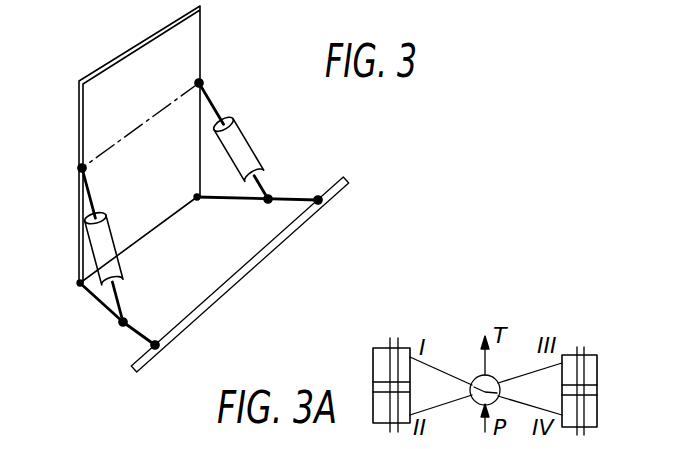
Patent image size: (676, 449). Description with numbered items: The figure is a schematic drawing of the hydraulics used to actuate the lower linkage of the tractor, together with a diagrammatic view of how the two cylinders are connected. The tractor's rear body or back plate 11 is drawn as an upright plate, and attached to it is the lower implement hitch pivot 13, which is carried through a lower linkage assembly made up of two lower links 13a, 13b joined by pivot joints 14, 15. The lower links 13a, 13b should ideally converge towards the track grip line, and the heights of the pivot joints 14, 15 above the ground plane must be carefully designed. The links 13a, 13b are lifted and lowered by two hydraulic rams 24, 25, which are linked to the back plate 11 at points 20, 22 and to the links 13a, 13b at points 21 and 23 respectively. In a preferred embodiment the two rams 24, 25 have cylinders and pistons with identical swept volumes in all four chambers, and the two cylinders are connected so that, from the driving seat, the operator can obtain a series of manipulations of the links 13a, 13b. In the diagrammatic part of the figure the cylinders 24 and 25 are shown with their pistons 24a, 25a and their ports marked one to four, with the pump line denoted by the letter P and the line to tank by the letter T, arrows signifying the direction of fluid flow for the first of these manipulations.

In FIG. 3, the rear body 11 is at (186, 50).
In FIG. 3, the lower implement hitch pivot 13 is at (240, 278).
In FIG. 3, the lower link 13a is at (232, 202).
In FIG. 3, the lower link 13b is at (142, 337).
In FIG. 3, the pivot joint 14 is at (325, 202).
In FIG. 3, the pivot joint 15 is at (160, 348).
In FIG. 3, the point 20 is at (204, 81).
In FIG. 3, the point 21 is at (274, 192).
In FIG. 3, the point 22 is at (77, 169).
In FIG. 3, the point 23 is at (119, 324).
In FIG. 3, the hydraulic ram 24 is at (107, 247).
In FIG. 3A, the hydraulic ram 24 is at (373, 355).
In FIG. 3A, the piston 24a is at (400, 388).
In FIG. 3, the hydraulic ram 25 is at (237, 149).
In FIG. 3A, the hydraulic ram 25 is at (597, 362).
In FIG. 3A, the piston 25a is at (597, 393).